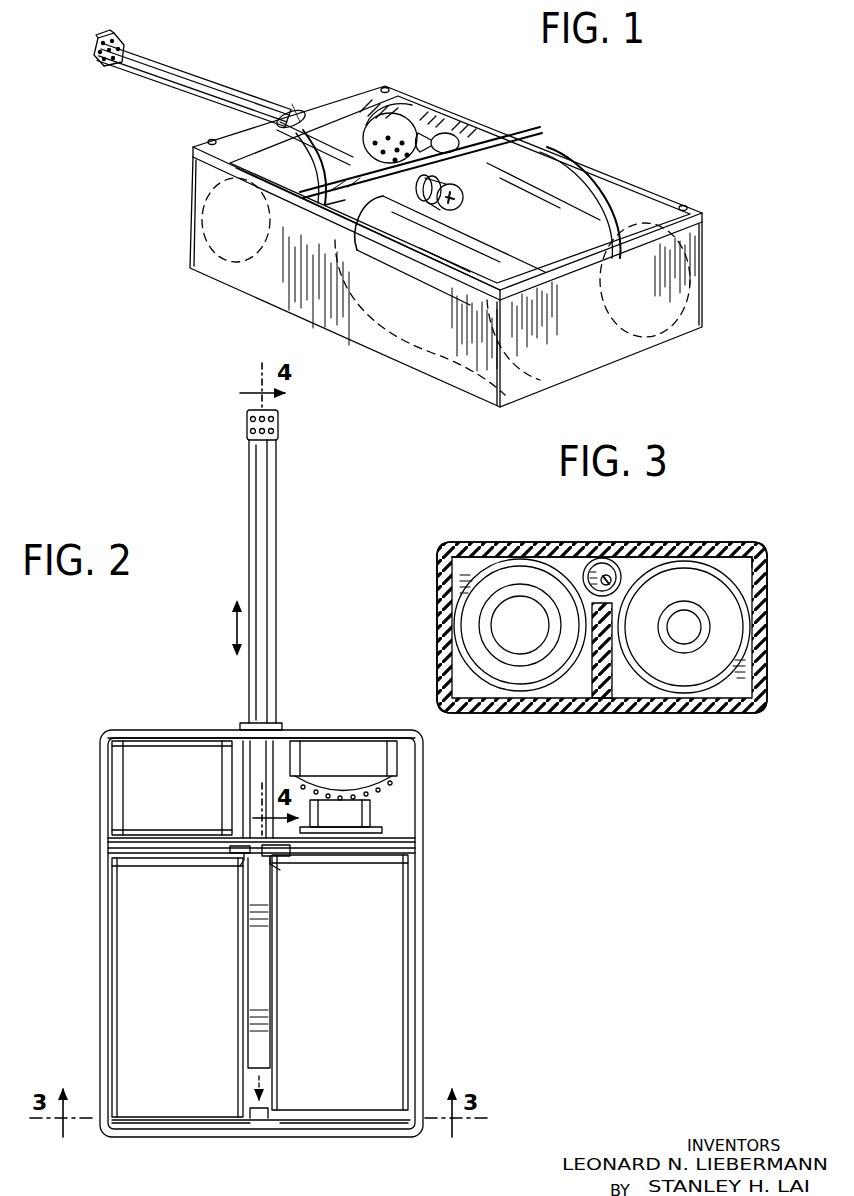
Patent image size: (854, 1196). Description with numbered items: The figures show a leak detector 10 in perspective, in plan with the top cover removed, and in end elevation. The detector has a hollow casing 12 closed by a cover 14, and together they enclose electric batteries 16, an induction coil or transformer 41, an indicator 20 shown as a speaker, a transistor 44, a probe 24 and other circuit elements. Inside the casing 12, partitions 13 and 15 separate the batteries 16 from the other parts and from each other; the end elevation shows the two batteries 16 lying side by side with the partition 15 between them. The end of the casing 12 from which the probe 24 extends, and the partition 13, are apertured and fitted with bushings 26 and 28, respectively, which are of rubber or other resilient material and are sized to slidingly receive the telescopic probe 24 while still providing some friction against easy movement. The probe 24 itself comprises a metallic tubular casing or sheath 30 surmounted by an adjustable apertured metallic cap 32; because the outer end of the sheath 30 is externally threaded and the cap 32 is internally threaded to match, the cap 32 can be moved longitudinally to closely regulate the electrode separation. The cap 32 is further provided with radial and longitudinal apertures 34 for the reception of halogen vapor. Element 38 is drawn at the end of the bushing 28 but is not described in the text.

In FIG. 1, the leak detector 10 is at (566, 142).
In FIG. 2, the leak detector 10 is at (96, 854).
In FIG. 3, the leak detector 10 is at (516, 533).
In FIG. 1, the hollow casing 12 is at (711, 297).
In FIG. 2, the hollow casing 12 is at (414, 1027).
In FIG. 3, the hollow casing 12 is at (767, 683).
In FIG. 1, the partition 13 is at (466, 146).
In FIG. 2, the partition 13 is at (398, 836).
In FIG. 3, the partition 13 is at (737, 572).
In FIG. 1, the cover 14 is at (660, 187).
In FIG. 3, the cover 14 is at (714, 537).
In FIG. 2, the partition 15 is at (260, 973).
In FIG. 3, the partition 15 is at (604, 677).
In FIG. 1, the electric batteries 16 is at (555, 231).
In FIG. 2, the electric batteries 16 is at (163, 971).
In FIG. 3, the electric batteries 16 is at (470, 621).
In FIG. 1, the indicator 20 is at (400, 135).
In FIG. 2, the indicator 20 is at (353, 767).
In FIG. 1, the probe 24 is at (258, 91).
In FIG. 2, the probe 24 is at (281, 648).
In FIG. 3, the probe 24 is at (609, 562).
In FIG. 1, the bushing 26 is at (282, 111).
In FIG. 2, the bushing 26 is at (279, 728).
In FIG. 1, the bushing 28 is at (428, 175).
In FIG. 2, the bushing 28 is at (270, 862).
In FIG. 3, the bushing 28 is at (625, 569).
In FIG. 1, the tubular casing or sheath 30 is at (193, 88).
In FIG. 2, the tubular casing or sheath 30 is at (271, 559).
In FIG. 1, the apertured metallic cap 32 is at (122, 37).
In FIG. 2, the apertured metallic cap 32 is at (278, 426).
In FIG. 1, the apertures 34 is at (96, 58).
In FIG. 2, the apertures 34 is at (244, 432).
In FIG. 1, the reel end knob 38 is at (462, 201).
In FIG. 2, the reel end knob 38 is at (245, 864).
In FIG. 3, the reel end knob 38 is at (608, 581).
In FIG. 1, the induction coil or transformer 41 is at (286, 176).
In FIG. 2, the induction coil or transformer 41 is at (182, 790).
In FIG. 1, the transistor 44 is at (442, 130).
In FIG. 2, the transistor 44 is at (356, 817).